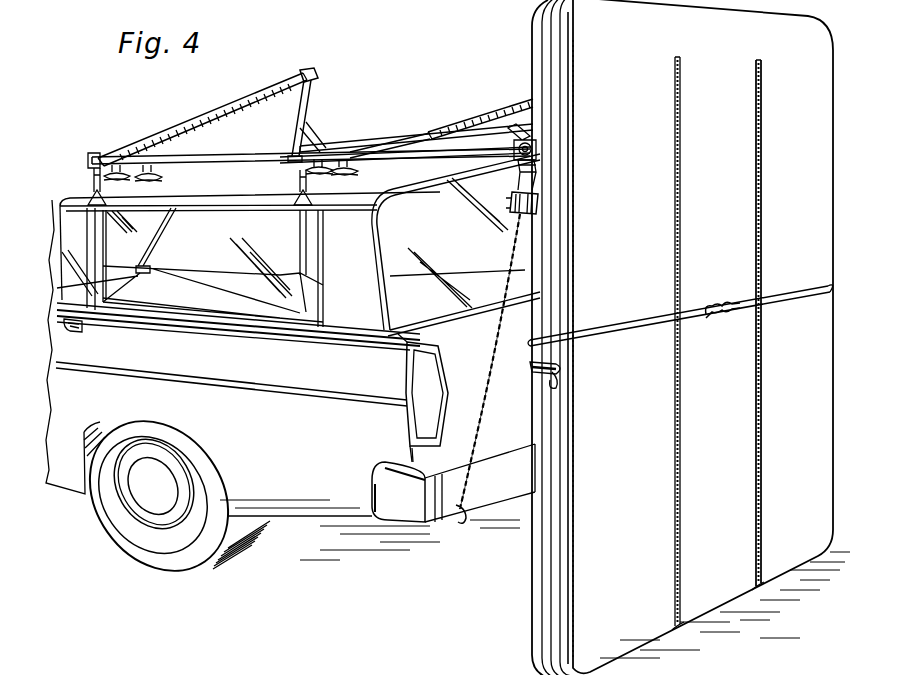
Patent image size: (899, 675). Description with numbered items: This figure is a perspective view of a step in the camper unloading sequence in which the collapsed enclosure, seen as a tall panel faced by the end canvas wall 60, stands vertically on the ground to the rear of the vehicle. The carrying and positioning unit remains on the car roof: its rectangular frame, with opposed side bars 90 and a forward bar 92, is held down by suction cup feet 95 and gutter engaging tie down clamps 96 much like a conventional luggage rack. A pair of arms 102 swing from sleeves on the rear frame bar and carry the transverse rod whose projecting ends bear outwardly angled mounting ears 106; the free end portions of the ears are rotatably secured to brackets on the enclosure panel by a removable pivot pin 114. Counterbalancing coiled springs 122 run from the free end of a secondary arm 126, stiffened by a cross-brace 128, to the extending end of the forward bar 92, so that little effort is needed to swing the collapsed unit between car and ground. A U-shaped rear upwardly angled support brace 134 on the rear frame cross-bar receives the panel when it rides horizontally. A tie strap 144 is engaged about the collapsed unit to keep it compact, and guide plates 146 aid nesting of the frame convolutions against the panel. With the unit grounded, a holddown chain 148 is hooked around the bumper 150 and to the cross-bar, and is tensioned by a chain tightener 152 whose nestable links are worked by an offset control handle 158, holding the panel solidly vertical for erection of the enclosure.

The end canvas wall 60 is at (816, 110).
The side bars 90 is at (722, 452).
The forward bar 92 is at (760, 519).
The suction cup feet 95 is at (140, 178).
The gutter engaging tie down clamps 96 is at (88, 180).
The arms 102 is at (409, 150).
The mounting ears 106 is at (514, 132).
The pivot pin 114 is at (531, 148).
The counterbalancing coiled springs 122 is at (188, 126).
The secondary arm 126 is at (312, 78).
The cross-brace 128 is at (316, 138).
The rear upwardly angled support brace 134 is at (392, 132).
The tie strap 144 is at (652, 322).
The guide plates 146 is at (556, 380).
The holddown chains 148 is at (506, 243).
The bumper 150 is at (436, 520).
The chain tightener 152 is at (542, 213).
The offset control handle 158 is at (538, 176).